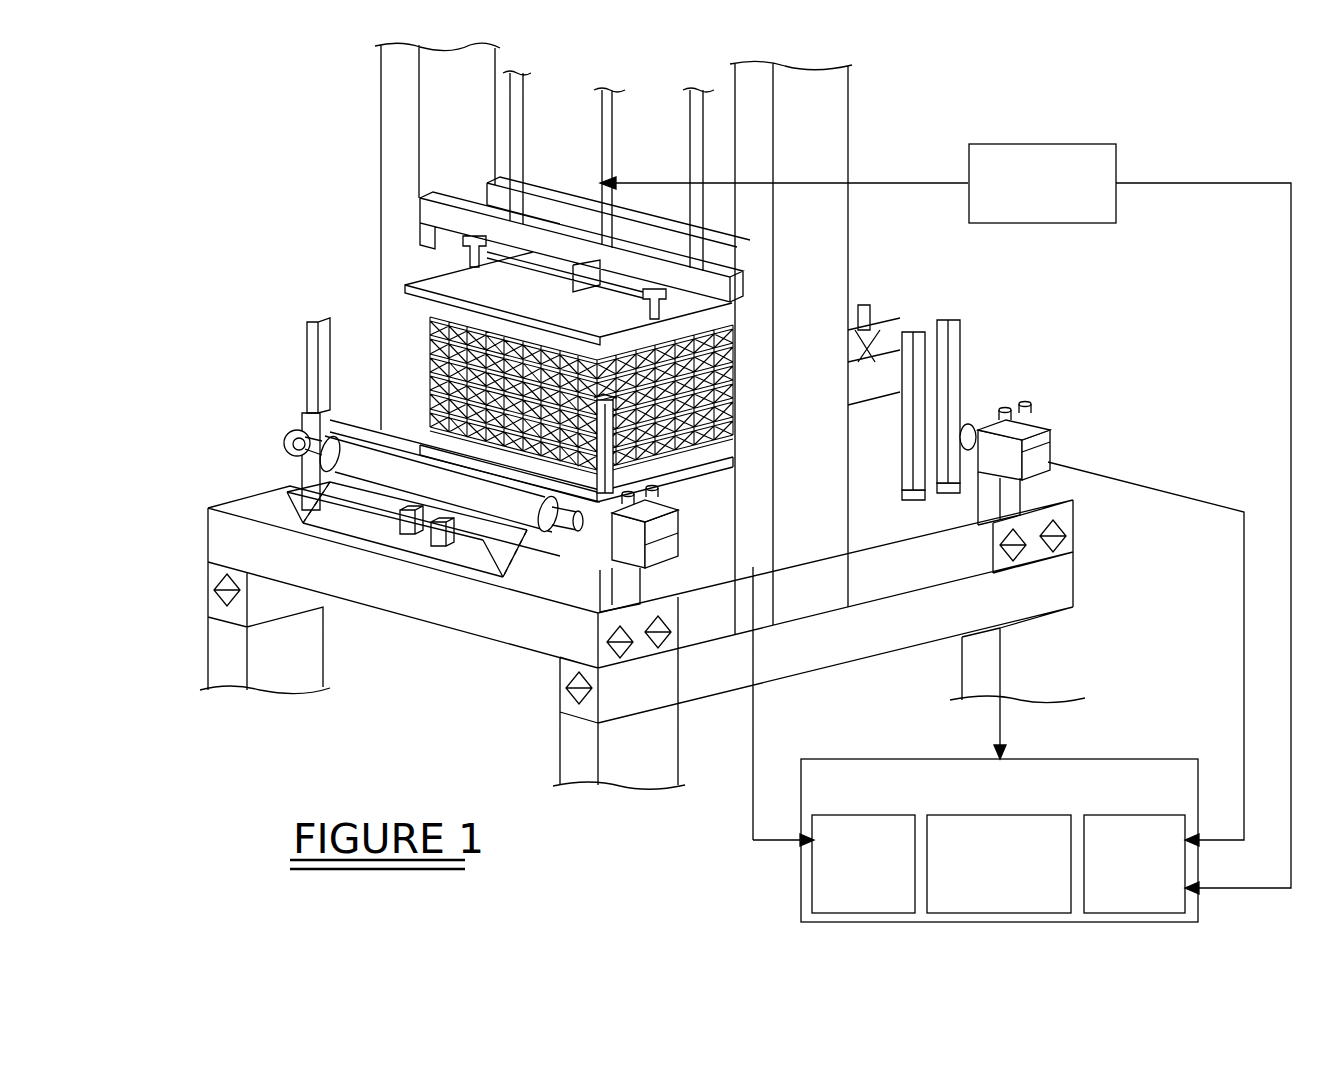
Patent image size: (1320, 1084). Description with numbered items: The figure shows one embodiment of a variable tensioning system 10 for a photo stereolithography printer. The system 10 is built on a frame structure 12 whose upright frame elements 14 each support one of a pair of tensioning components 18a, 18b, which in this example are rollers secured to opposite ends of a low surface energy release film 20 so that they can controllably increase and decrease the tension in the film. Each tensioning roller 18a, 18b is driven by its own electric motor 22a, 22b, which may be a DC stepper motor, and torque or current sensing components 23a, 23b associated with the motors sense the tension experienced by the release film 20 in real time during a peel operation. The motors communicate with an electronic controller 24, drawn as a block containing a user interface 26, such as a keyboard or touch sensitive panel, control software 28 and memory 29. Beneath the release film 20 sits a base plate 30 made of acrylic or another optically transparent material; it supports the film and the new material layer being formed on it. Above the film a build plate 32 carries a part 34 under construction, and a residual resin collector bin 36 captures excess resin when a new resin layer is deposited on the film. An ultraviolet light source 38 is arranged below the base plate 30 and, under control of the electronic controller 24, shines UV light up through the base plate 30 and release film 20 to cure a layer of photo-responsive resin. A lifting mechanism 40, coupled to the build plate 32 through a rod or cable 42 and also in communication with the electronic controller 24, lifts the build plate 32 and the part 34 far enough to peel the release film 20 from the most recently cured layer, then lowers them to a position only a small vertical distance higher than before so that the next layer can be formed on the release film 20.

The variable tensioning system 10 is at (1062, 98).
The frame structure 12 is at (178, 537).
The upright frame elements 14 is at (381, 68).
The tensioning component 18a is at (330, 461).
The tensioning component 18b is at (966, 424).
The low surface energy release film 20 is at (363, 436).
The electric motor 22a is at (600, 546).
The electric motor 22b is at (1040, 424).
The torque or current sensing component 23a is at (665, 532).
The torque or current sensing component 23b is at (1040, 447).
The electronic controller 24 is at (1004, 838).
The user interface 26 is at (857, 913).
The control software 28 is at (1006, 913).
The memory 29 is at (1140, 913).
The base plate 30 is at (368, 417).
The build plate 32 is at (447, 292).
The part 34 is at (450, 316).
The residual resin collector bin 36 is at (390, 528).
The ultraviolet light source 38 is at (722, 489).
The lifting mechanism 40 is at (1116, 157).
The cable 42 is at (601, 129).